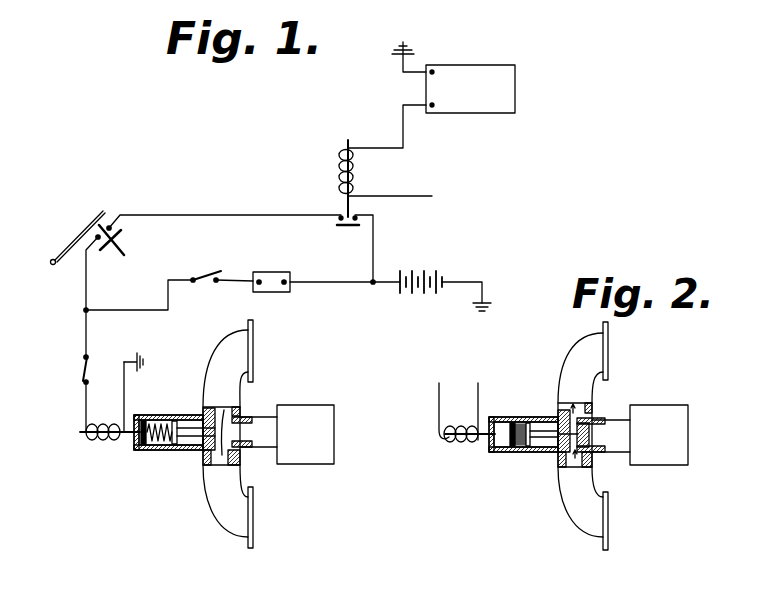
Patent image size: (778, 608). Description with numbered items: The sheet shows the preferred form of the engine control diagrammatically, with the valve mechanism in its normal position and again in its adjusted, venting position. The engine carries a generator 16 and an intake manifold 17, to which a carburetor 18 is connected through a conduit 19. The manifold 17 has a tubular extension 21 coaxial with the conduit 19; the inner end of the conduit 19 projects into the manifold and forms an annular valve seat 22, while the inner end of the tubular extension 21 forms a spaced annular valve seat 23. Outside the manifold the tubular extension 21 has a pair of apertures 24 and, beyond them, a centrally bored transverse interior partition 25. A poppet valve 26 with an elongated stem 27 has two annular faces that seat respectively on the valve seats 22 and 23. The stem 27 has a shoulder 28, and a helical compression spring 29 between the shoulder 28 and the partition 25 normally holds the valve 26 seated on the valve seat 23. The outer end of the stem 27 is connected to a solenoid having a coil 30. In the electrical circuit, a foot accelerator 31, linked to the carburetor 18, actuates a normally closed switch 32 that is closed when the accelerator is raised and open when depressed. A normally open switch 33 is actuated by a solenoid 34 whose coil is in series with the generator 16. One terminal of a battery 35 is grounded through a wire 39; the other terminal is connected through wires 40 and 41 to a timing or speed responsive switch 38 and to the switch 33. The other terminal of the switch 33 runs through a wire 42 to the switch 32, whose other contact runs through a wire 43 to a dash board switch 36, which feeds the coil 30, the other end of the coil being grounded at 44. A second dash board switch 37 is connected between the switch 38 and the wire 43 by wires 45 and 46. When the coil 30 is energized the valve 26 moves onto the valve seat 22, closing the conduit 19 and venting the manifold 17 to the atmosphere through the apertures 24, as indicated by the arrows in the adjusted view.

In FIG. 1, the generator 16 is at (505, 114).
In FIG. 1, the intake manifold 17 is at (224, 352).
In FIG. 2, the intake manifold 17 is at (582, 360).
In FIG. 1, the carburetor 18 is at (303, 405).
In FIG. 2, the carburetor 18 is at (662, 405).
In FIG. 1, the conduit 19 is at (256, 416).
In FIG. 2, the conduit 19 is at (612, 454).
In FIG. 1, the tubular extension 21 is at (158, 414).
In FIG. 2, the tubular extension 21 is at (496, 416).
In FIG. 1, the annular valve seat 22 is at (222, 466).
In FIG. 2, the annular valve seat 22 is at (594, 400).
In FIG. 1, the annular valve seat 23 is at (208, 406).
In FIG. 2, the annular valve seat 23 is at (562, 408).
In FIG. 1, the apertures 24 is at (194, 416).
In FIG. 2, the apertures 24 is at (530, 418).
In FIG. 1, the transverse interior partition 25 is at (162, 446).
In FIG. 1, the poppet valve 26 is at (222, 410).
In FIG. 2, the poppet valve 26 is at (590, 432).
In FIG. 1, the valve stem 27 is at (122, 438).
In FIG. 2, the valve stem 27 is at (480, 440).
In FIG. 1, the shoulder 28 is at (143, 420).
In FIG. 2, the shoulder 28 is at (512, 422).
In FIG. 1, the helical compression spring 29 is at (148, 446).
In FIG. 2, the helical compression spring 29 is at (518, 448).
In FIG. 1, the solenoid coil 30 is at (86, 441).
In FIG. 2, the solenoid coil 30 is at (448, 442).
In FIG. 1, the foot accelerator 31 is at (78, 236).
In FIG. 1, the normally closed switch 32 is at (118, 236).
In FIG. 1, the normally open switch 33 is at (340, 227).
In FIG. 1, the solenoid 34 is at (340, 172).
In FIG. 1, the battery 35 is at (422, 268).
In FIG. 1, the on-off switch 36 is at (84, 372).
In FIG. 1, the on-off switch 37 is at (213, 260).
In FIG. 1, the timing or speed responsive switch 38 is at (288, 258).
In FIG. 1, the wire 39 is at (470, 282).
In FIG. 1, the wire 40 is at (325, 283).
In FIG. 1, the wire 41 is at (375, 248).
In FIG. 1, the wire 42 is at (205, 215).
In FIG. 1, the wire 43 is at (84, 298).
In FIG. 1, the ground connection 44 is at (137, 352).
In FIG. 1, the wire 45 is at (160, 294).
In FIG. 1, the wire 46 is at (230, 282).